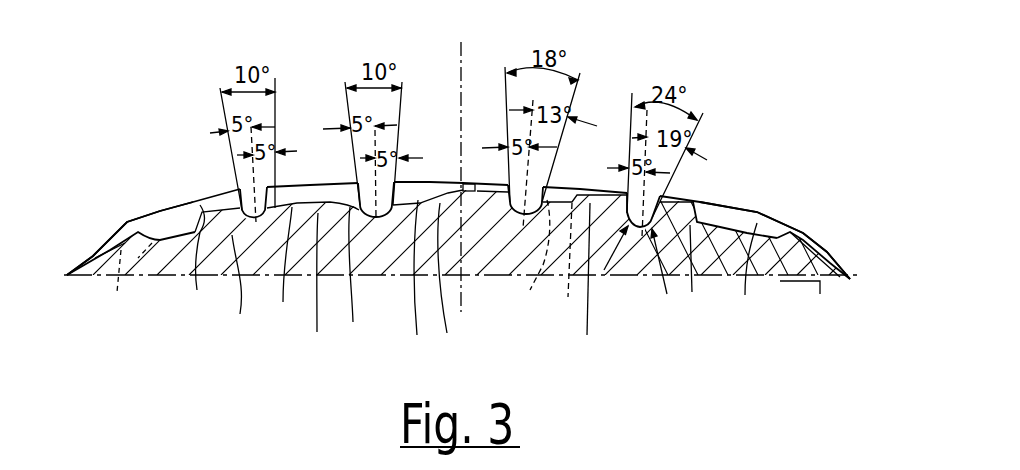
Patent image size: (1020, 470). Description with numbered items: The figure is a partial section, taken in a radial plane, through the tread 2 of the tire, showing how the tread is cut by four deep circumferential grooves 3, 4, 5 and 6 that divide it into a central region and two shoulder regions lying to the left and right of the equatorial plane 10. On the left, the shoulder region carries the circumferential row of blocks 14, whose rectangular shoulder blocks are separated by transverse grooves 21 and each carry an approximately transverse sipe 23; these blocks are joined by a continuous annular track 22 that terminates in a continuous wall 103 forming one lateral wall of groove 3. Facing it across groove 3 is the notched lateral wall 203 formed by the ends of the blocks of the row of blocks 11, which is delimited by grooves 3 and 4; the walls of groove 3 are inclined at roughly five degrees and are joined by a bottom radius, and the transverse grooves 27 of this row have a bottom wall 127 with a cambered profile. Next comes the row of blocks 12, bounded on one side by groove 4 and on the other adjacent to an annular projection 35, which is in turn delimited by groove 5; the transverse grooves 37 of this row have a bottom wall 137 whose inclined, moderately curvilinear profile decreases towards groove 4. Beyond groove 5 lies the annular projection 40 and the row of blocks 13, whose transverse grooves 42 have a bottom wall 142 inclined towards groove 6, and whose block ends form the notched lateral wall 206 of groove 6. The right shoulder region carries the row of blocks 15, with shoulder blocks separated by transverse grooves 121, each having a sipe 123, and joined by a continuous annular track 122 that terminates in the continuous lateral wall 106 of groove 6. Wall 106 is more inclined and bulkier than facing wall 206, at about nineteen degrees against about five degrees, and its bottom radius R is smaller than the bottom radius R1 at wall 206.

The tread 2 is at (607, 100).
The circumferential groove 3 is at (253, 222).
The circumferential groove 4 is at (375, 217).
The circumferential groove 5 is at (525, 215).
The circumferential groove 6 is at (640, 228).
The equatorial plane 10 is at (460, 297).
The circumferential row of blocks 11 is at (308, 185).
The circumferential row of blocks 12 is at (425, 181).
The circumferential row of blocks 13 is at (592, 197).
The circumferential row of blocks 14 is at (170, 203).
The circumferential row of blocks 15 is at (760, 210).
The transverse grooves 21 is at (214, 262).
The continuous annular track 22 is at (217, 197).
The sipe 23 is at (134, 283).
The transverse grooves 27 is at (356, 280).
The annular projection 35 is at (480, 178).
The transverse grooves 37 is at (451, 282).
The annular projection 40 is at (566, 196).
The transverse grooves 42 is at (532, 261).
The continuous wall 103 is at (241, 290).
The continuous lateral wall 106 is at (704, 272).
The transverse grooves 121 is at (751, 273).
The continuous annular track 122 is at (677, 197).
The sipe 123 is at (808, 304).
The bottom wall 127 is at (316, 288).
The bottom wall 137 is at (424, 283).
The bottom wall 142 is at (562, 268).
The notched lateral wall 203 is at (289, 270).
The notched lateral wall 206 is at (579, 284).
The bottom radius R is at (665, 277).
The bottom radius R1 is at (608, 273).